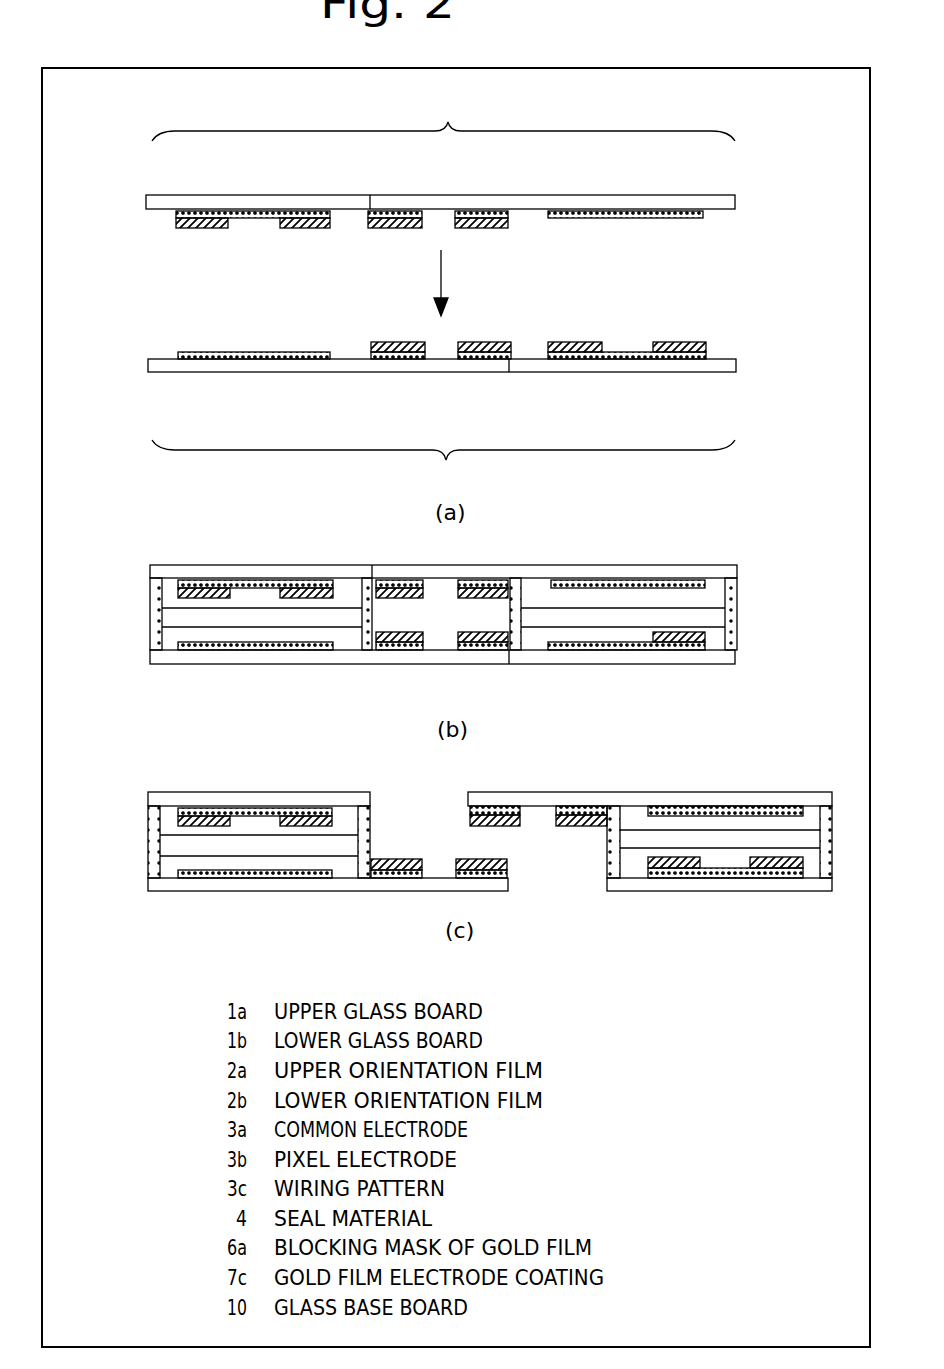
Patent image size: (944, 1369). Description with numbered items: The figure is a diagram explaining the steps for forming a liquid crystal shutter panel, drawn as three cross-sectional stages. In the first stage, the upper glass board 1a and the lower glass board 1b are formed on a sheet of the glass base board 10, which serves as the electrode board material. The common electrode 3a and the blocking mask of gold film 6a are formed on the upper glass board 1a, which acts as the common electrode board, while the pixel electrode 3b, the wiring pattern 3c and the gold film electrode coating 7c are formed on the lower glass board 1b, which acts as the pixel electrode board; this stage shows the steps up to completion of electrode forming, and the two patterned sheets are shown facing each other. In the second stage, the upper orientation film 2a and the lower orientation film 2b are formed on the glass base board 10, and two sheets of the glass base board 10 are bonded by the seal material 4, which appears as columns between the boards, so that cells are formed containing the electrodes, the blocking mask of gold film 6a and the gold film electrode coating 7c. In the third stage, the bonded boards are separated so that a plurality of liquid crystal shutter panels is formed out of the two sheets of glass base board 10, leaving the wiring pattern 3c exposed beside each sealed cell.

The upper glass board 1a is at (148, 197).
The lower glass board 1b is at (736, 196).
The upper orientation film 2a is at (168, 592).
The lower orientation film 2b is at (167, 637).
The common electrode 3a is at (176, 213).
The pixel electrode 3b is at (697, 222).
The wiring pattern 3c is at (472, 210).
The seal material 4 is at (155, 624).
The blocking mask of gold film 6a is at (180, 230).
The gold film electrode coating 7c is at (483, 233).
The glass base board 10 is at (428, 700).